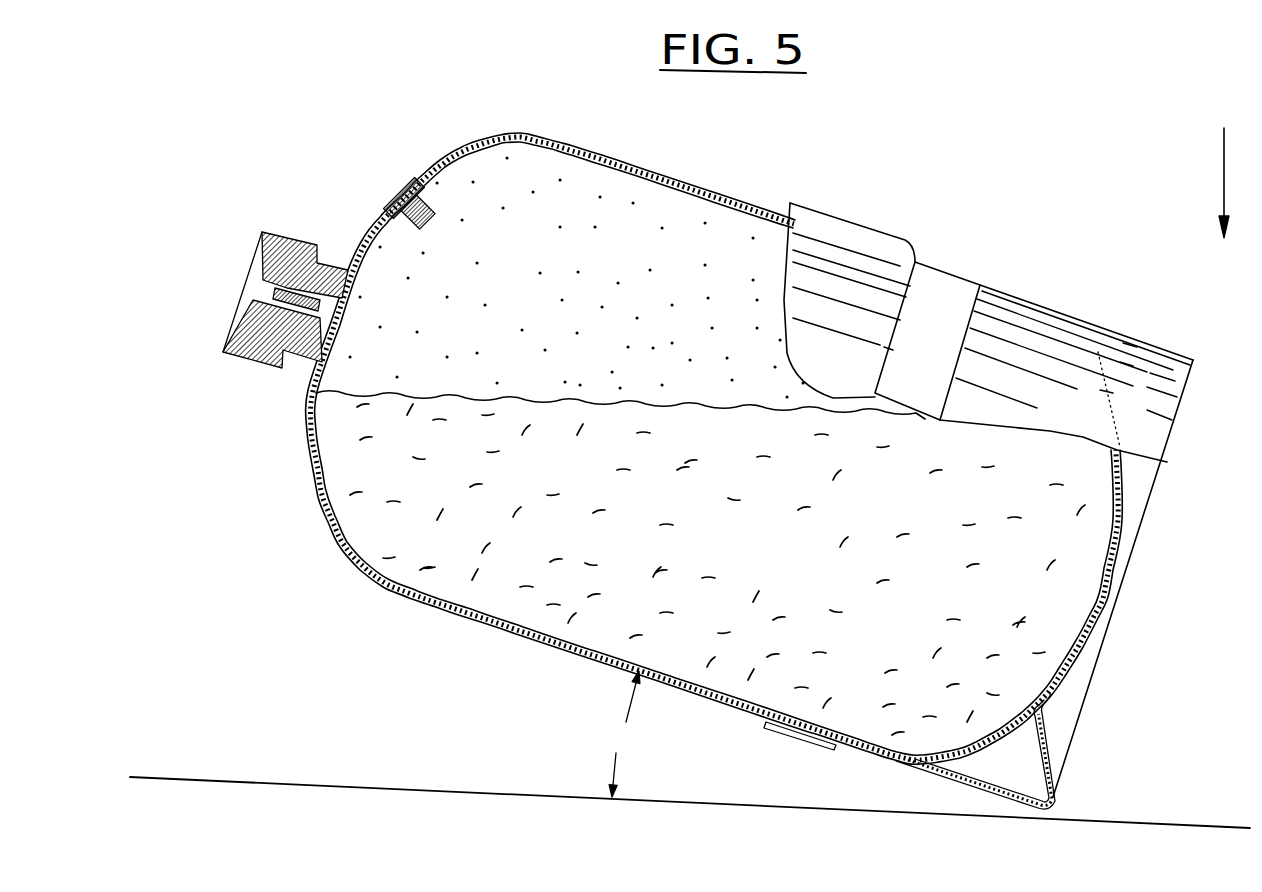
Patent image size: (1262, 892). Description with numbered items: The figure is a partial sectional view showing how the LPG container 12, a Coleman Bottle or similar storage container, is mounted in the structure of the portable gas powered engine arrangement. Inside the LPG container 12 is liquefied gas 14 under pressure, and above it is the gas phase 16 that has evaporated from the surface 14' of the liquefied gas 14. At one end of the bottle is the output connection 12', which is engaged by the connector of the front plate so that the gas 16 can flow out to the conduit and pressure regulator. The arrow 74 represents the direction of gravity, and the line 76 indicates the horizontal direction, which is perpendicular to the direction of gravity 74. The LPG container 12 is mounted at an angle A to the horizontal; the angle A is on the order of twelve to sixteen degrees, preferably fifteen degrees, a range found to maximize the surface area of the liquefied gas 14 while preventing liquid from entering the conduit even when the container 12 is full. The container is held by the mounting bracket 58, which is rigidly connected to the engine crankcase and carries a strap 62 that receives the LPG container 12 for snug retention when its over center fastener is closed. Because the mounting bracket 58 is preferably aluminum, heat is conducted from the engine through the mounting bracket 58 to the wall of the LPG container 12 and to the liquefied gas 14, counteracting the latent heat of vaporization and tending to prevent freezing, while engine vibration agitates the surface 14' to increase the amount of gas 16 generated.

The LPG container 12 is at (746, 471).
The output connection 12' is at (285, 271).
The liquefied gas 14 is at (717, 569).
The surface of the liquefied gas 14' is at (620, 382).
The gas phase 16 is at (542, 275).
The mounting bracket 58 is at (732, 184).
The strap 62 is at (961, 256).
The arrow representing the direction of gravity 74 is at (1220, 191).
The horizontal line 76 is at (327, 771).
The angle A is at (624, 734).